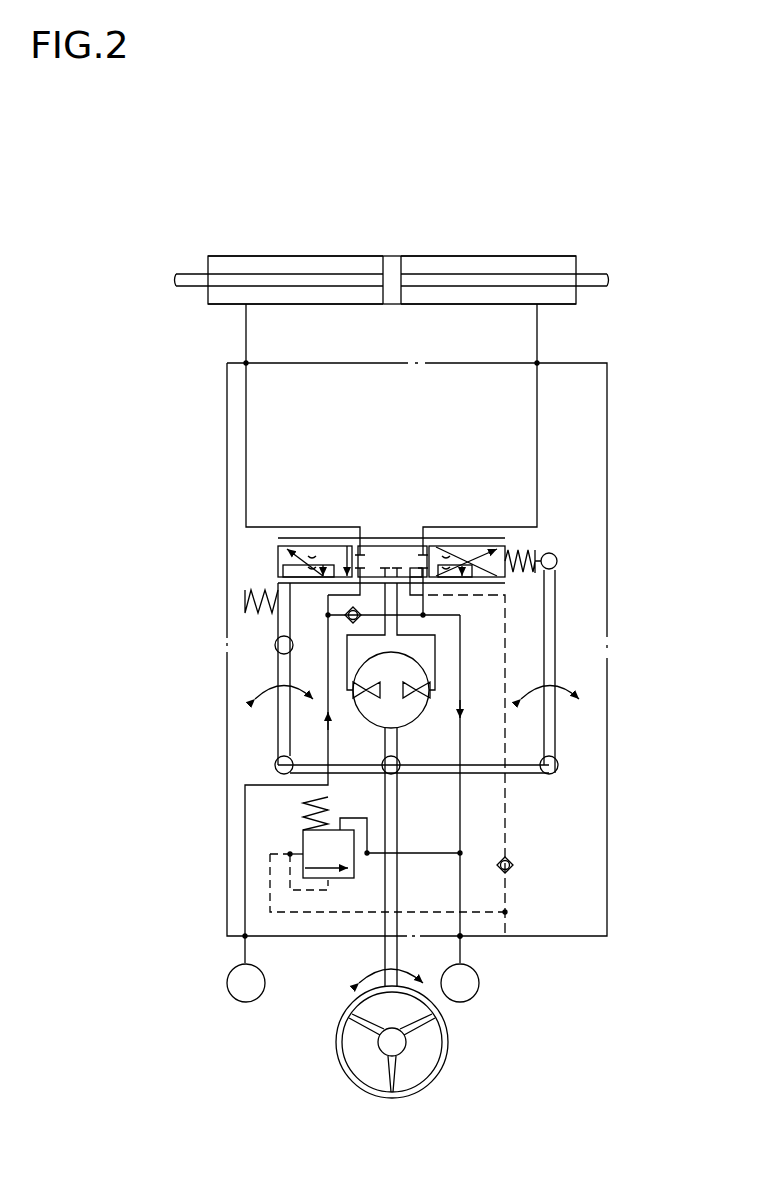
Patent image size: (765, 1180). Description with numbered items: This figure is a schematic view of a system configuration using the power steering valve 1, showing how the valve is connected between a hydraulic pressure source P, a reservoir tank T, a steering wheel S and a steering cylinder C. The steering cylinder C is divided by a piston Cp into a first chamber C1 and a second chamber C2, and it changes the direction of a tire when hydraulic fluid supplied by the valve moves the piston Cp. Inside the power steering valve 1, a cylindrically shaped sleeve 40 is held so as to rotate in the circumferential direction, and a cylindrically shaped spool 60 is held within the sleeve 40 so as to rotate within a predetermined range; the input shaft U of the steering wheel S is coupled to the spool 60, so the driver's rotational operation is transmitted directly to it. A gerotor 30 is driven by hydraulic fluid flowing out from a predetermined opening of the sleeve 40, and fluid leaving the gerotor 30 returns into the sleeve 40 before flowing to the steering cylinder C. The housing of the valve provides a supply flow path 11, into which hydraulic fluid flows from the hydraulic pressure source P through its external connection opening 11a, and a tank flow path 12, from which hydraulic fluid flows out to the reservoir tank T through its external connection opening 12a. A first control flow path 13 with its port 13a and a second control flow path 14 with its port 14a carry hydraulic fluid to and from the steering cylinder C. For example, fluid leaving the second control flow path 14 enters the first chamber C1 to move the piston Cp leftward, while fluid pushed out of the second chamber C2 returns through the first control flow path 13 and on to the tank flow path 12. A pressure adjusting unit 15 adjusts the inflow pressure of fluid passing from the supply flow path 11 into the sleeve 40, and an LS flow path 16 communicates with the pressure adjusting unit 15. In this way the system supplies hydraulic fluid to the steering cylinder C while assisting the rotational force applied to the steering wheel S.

The power steering valve 1 is at (216, 426).
The steering cylinder C is at (592, 250).
The first chamber C1 is at (490, 261).
The second chamber C2 is at (288, 262).
The piston Cp is at (392, 262).
The first control flow path 13 is at (308, 527).
The external connection opening of the first control flow path 13a is at (255, 355).
The second control flow path 14 is at (470, 527).
The external connection opening of the second control flow path 14a is at (547, 355).
The sleeve 40 is at (388, 538).
The spool 60 is at (277, 563).
The gerotor 30 is at (418, 721).
The supply flow path 11 is at (323, 599).
The external connection opening of the supply flow path 11a is at (250, 942).
The tank flow path 12 is at (426, 606).
The external connection opening of the tank flow path 12a is at (463, 942).
The LS flow path 16 is at (508, 598).
The pressure adjusting unit 15 is at (295, 842).
The hydraulic pressure source P is at (264, 994).
The reservoir tank T is at (478, 994).
The input shaft U is at (384, 949).
The steering wheel S is at (447, 1063).